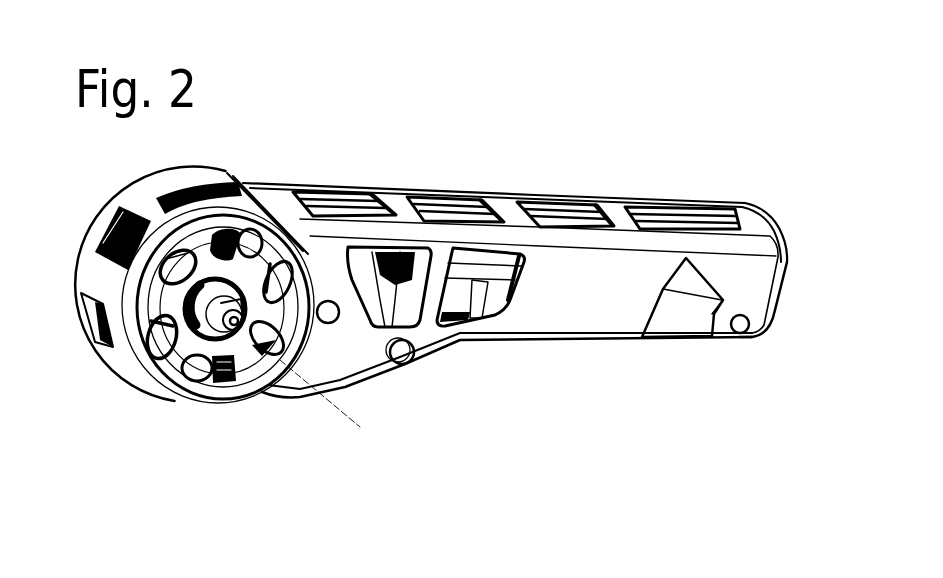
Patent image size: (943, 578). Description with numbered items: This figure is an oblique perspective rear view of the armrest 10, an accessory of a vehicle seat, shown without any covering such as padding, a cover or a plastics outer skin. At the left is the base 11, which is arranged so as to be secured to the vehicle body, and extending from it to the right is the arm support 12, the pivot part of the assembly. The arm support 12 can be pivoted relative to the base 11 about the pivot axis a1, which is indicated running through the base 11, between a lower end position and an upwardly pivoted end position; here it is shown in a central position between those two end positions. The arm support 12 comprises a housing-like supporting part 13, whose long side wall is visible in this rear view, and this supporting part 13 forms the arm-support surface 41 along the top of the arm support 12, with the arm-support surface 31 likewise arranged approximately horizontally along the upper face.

The armrest 10 is at (431, 241).
The base 11 is at (227, 343).
The arm support 12 is at (515, 256).
The supporting part 13 is at (568, 302).
The arm-support surface 31 is at (520, 190).
The arm-support surface 41 is at (696, 178).
The pivot axis a1 is at (337, 407).